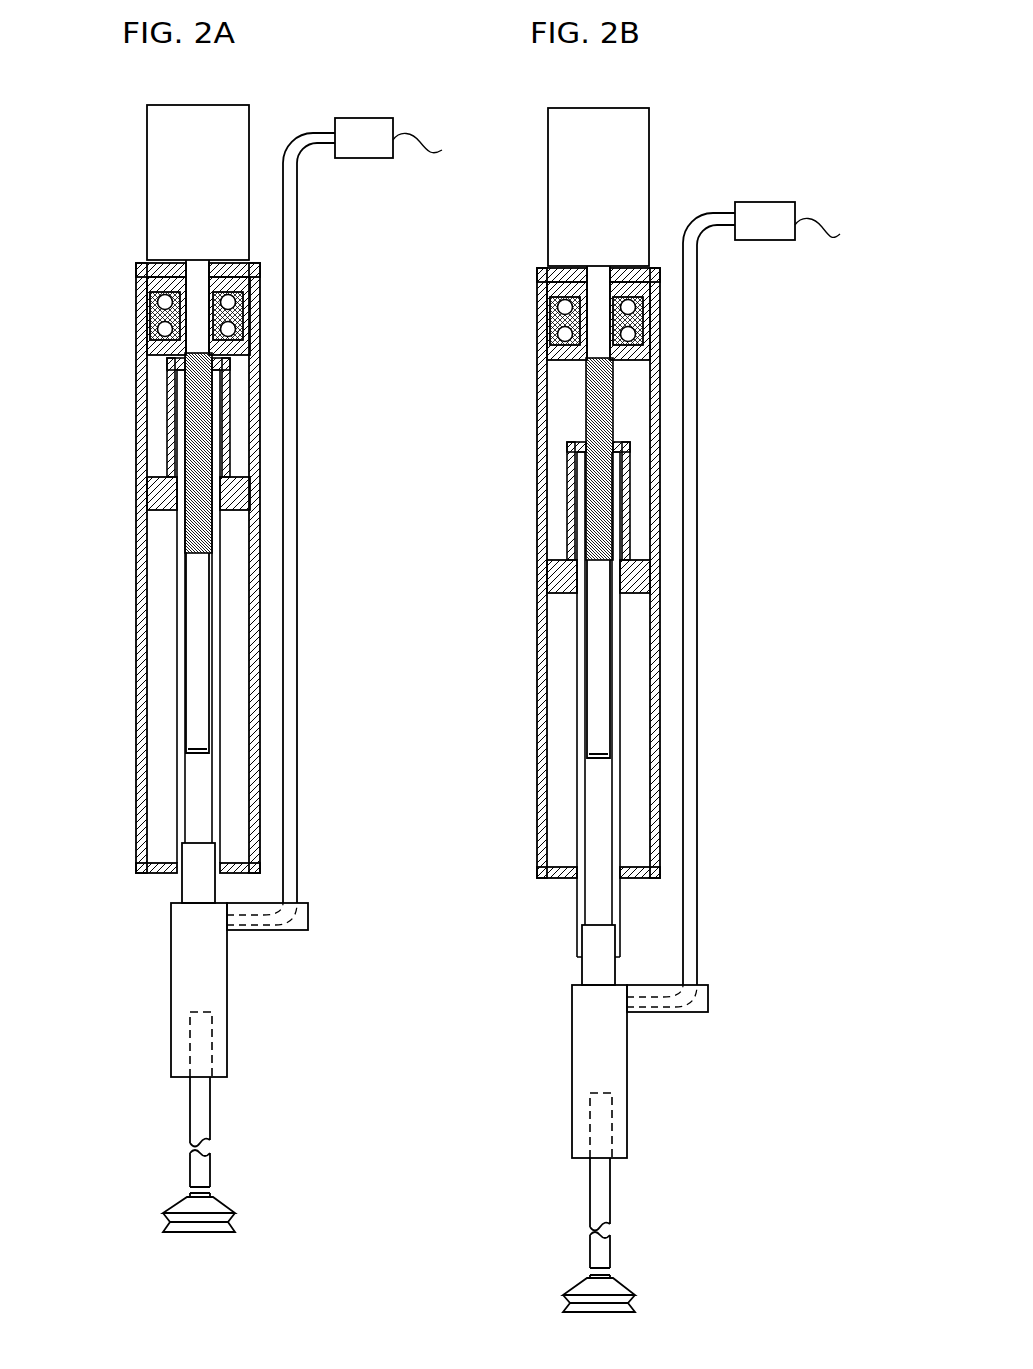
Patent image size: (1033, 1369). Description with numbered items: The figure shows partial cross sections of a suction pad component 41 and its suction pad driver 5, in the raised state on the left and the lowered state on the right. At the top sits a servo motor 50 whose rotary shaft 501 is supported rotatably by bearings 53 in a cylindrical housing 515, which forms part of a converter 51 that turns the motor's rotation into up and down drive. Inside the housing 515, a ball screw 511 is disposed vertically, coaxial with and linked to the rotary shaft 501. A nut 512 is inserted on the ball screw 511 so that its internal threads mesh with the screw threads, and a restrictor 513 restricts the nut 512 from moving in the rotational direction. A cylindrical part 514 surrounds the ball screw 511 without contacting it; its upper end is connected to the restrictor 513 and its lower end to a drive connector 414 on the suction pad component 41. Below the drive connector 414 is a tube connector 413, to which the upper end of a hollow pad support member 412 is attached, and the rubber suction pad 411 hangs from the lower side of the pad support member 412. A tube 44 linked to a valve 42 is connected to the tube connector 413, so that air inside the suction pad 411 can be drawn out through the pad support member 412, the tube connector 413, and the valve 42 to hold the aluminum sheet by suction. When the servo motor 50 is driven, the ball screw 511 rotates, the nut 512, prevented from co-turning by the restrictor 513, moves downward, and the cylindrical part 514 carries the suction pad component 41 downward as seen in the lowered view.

In FIG. 2A, the suction pad driver 5 is at (126, 246).
In FIG. 2B, the suction pad driver 5 is at (528, 249).
In FIG. 2A, the servo motor 50 is at (172, 163).
In FIG. 2B, the servo motor 50 is at (582, 140).
In FIG. 2A, the rotary shaft 501 is at (137, 282).
In FIG. 2B, the rotary shaft 501 is at (540, 285).
In FIG. 2A, the converter 51 is at (133, 664).
In FIG. 2B, the converter 51 is at (536, 691).
In FIG. 2A, the ball screw 511 is at (198, 562).
In FIG. 2B, the ball screw 511 is at (603, 587).
In FIG. 2A, the nut 512 is at (217, 408).
In FIG. 2B, the nut 512 is at (617, 498).
In FIG. 2A, the restrictor 513 is at (260, 483).
In FIG. 2B, the restrictor 513 is at (658, 570).
In FIG. 2A, the cylindrical part 514 is at (220, 570).
In FIG. 2B, the cylindrical part 514 is at (622, 660).
In FIG. 2A, the housing 515 is at (137, 712).
In FIG. 2B, the housing 515 is at (540, 752).
In FIG. 2A, the bearing 53 is at (142, 298).
In FIG. 2B, the bearing 53 is at (545, 300).
In FIG. 2A, the suction pad component 41 is at (236, 1036).
In FIG. 2B, the suction pad component 41 is at (639, 1116).
In FIG. 2A, the suction pad 411 is at (210, 1205).
In FIG. 2B, the suction pad 411 is at (615, 1283).
In FIG. 2A, the pad support member 412 is at (205, 1128).
In FIG. 2B, the pad support member 412 is at (608, 1208).
In FIG. 2A, the tube connector 413 is at (182, 983).
In FIG. 2B, the tube connector 413 is at (585, 1055).
In FIG. 2A, the drive connector 414 is at (195, 888).
In FIG. 2B, the drive connector 414 is at (597, 963).
In FIG. 2A, the valve 42 is at (409, 143).
In FIG. 2B, the valve 42 is at (804, 226).
In FIG. 2A, the tube 44 is at (291, 638).
In FIG. 2B, the tube 44 is at (690, 732).